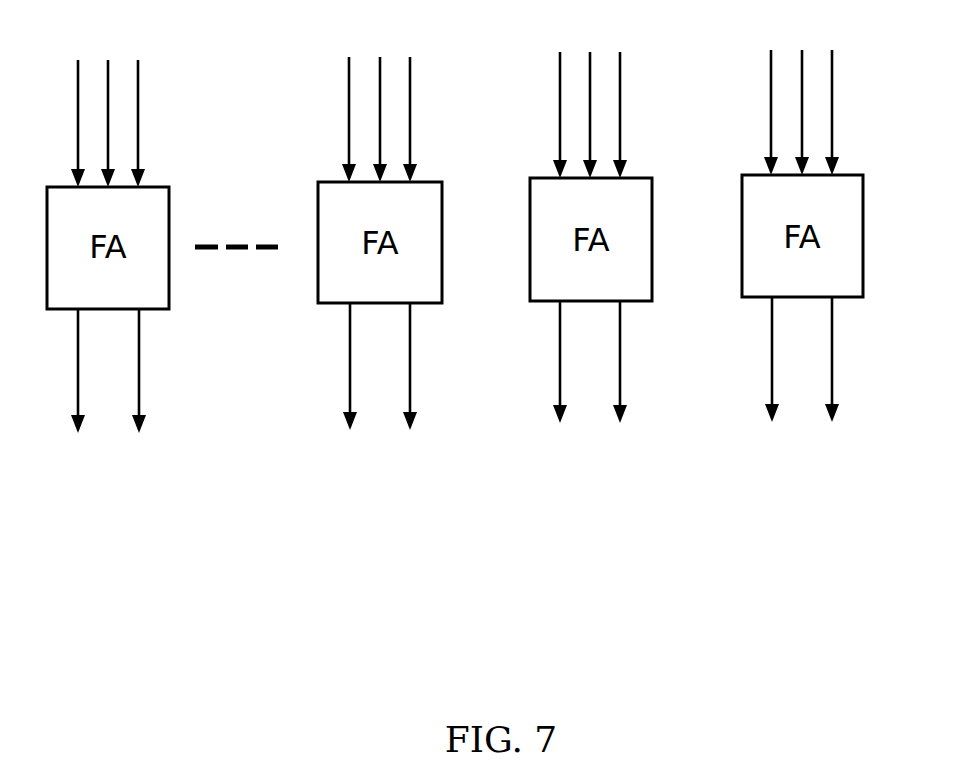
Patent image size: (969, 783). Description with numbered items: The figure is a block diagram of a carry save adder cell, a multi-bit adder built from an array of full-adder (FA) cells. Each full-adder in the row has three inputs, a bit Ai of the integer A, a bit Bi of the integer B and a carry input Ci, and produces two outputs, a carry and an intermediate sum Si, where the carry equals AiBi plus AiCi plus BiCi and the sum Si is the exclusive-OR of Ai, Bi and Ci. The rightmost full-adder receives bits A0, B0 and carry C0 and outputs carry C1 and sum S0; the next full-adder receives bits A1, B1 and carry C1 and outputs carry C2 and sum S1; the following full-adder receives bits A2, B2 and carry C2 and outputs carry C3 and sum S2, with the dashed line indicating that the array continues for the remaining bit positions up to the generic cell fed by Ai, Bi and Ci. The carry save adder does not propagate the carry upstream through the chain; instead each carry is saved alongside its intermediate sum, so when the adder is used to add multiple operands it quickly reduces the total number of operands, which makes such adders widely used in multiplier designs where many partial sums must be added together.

The input bit Ai is at (59, 102).
The input bit Bi is at (106, 102).
The carry input Ci is at (156, 102).
The sum output Si is at (155, 394).
The input bit A2 is at (324, 98).
The input bit B2 is at (386, 98).
The carry C2 is at (486, 244).
The carry output C3 is at (340, 390).
The sum output S2 is at (429, 388).
The input bit A1 is at (542, 94).
The input bit B1 is at (603, 94).
The carry C1 is at (697, 240).
The sum output S1 is at (639, 385).
The input bit A0 is at (754, 91).
The input bit B0 is at (814, 91).
The carry input C0 is at (856, 90).
The sum output S0 is at (852, 382).